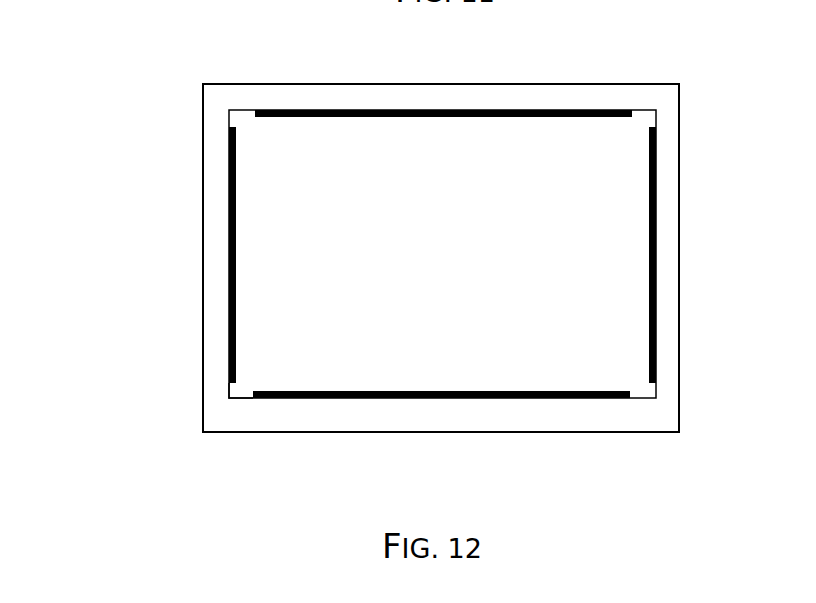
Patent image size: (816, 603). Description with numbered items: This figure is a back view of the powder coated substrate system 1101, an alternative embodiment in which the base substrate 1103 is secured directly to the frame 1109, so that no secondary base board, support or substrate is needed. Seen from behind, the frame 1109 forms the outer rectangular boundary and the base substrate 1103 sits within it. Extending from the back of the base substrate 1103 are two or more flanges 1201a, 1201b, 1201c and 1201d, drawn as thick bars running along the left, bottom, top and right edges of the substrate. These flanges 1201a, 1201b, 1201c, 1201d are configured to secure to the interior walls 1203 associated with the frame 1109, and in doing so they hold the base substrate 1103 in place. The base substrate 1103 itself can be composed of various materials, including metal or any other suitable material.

The powder coated substrate system 1101 is at (159, 52).
The base substrate 1103 is at (229, 118).
The frame 1109 is at (203, 178).
The flange 1201a is at (234, 302).
The flange 1201b is at (375, 391).
The flange 1201c is at (401, 117).
The flange 1201d is at (648, 243).
The interior walls 1203 is at (239, 386).